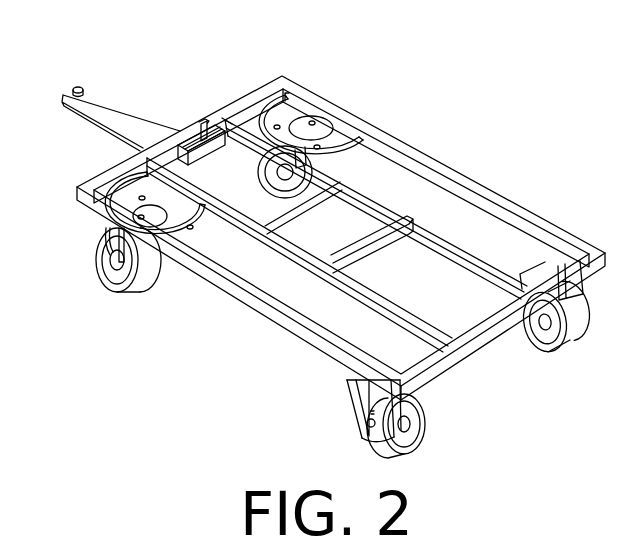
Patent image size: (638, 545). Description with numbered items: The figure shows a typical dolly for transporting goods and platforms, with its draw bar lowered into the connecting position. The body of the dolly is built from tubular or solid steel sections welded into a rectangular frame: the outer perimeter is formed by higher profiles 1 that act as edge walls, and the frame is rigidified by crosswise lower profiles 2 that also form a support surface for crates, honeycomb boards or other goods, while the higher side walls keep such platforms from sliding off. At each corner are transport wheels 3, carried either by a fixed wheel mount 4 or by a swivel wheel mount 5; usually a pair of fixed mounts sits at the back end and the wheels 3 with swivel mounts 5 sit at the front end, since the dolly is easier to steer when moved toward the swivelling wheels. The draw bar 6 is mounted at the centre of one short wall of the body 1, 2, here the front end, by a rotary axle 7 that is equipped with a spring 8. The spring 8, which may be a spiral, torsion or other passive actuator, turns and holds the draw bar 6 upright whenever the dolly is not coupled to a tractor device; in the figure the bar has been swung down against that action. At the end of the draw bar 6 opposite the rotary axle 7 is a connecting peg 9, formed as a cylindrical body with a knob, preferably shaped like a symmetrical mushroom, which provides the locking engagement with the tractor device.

The higher profiles 1 is at (410, 140).
The crosswise lower profiles 2 is at (451, 244).
The transport wheels 3 is at (418, 430).
The fixed wheel mount 4 is at (350, 396).
The swivel wheel mount 5 is at (134, 268).
The draw bar 6 is at (113, 99).
The rotary axle 7 is at (196, 140).
The spring 8 is at (204, 120).
The connecting peg 9 is at (78, 87).